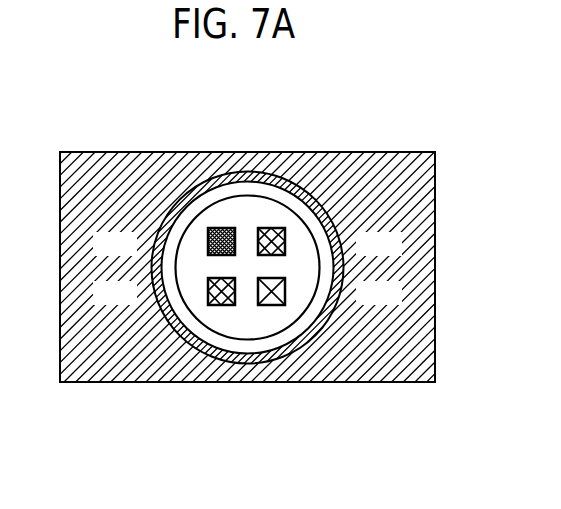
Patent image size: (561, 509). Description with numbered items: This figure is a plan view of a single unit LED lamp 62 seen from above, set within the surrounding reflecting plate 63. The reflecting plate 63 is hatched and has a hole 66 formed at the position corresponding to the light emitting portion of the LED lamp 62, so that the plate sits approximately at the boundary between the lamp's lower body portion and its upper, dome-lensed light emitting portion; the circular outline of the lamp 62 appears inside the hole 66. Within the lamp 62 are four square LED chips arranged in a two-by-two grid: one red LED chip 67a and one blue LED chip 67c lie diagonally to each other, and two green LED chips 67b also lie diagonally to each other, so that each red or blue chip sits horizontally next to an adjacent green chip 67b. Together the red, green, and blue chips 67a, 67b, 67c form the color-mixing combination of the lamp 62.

The reflecting plate 63 is at (140, 158).
The holes 66 is at (215, 182).
The LED lamp 62 is at (263, 203).
The red LED chip 67a is at (208, 241).
The green LED chips 67b is at (285, 241).
The blue LED chip 67c is at (285, 292).